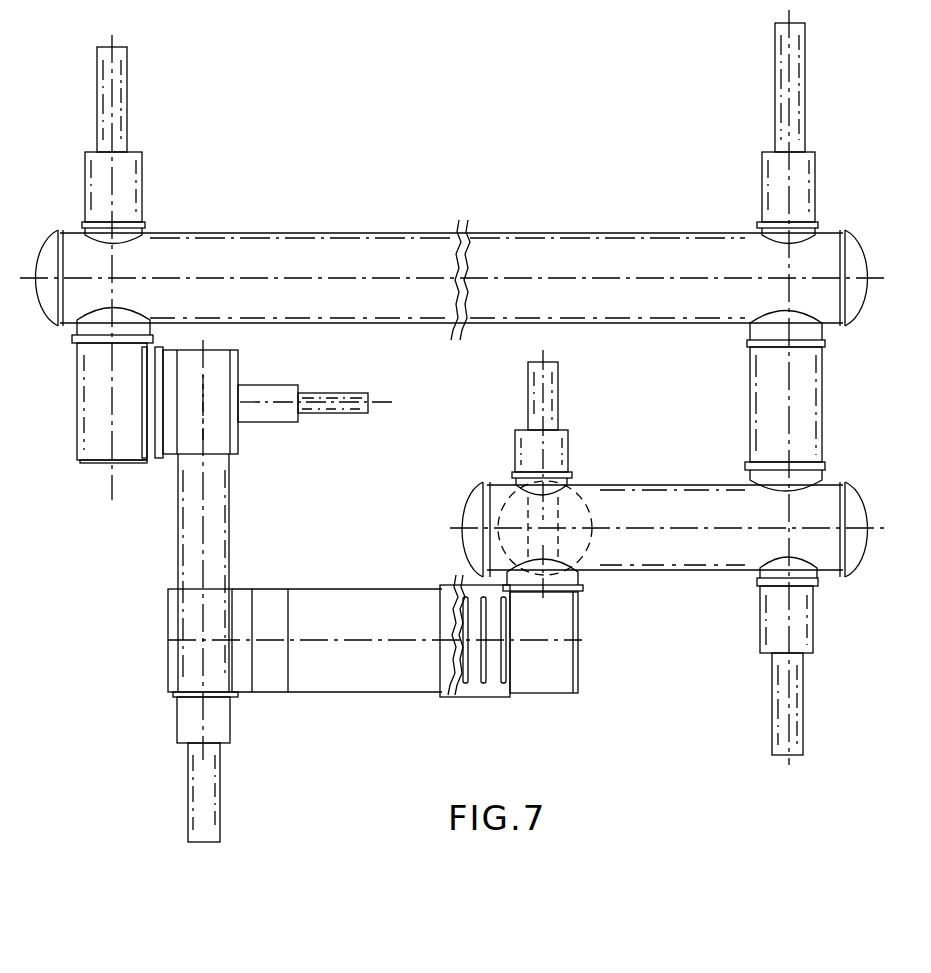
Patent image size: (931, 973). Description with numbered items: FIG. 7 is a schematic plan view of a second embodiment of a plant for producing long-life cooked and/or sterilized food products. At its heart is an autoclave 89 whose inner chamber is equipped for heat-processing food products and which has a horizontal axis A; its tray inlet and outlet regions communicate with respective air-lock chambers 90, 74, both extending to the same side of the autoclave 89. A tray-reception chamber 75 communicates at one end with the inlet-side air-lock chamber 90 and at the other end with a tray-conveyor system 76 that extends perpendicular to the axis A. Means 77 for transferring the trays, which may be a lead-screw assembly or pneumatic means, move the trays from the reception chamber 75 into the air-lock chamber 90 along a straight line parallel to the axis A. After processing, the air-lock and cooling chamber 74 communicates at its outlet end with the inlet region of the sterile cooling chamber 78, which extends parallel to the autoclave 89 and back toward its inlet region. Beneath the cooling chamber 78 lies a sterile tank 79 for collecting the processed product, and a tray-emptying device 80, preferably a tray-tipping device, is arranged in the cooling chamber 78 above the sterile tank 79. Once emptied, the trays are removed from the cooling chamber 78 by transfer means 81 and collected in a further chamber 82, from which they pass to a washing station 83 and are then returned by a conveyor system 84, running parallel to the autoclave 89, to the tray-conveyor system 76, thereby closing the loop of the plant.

The air-lock and cooling chamber 74 is at (750, 412).
The tray-reception chamber 75 is at (173, 447).
The tray-conveyor system 76 is at (230, 563).
The means for transferring the trays 77 is at (278, 390).
The cooling chamber 78 is at (660, 568).
The sterile tank 79 is at (595, 513).
The tray-emptying device 80 is at (560, 510).
The transfer means 81 is at (552, 387).
The further chamber 82 is at (582, 668).
The washing station 83 is at (490, 688).
The conveyor system 84 is at (372, 693).
The autoclave 89 is at (430, 240).
The inlet-side air-lock chamber 90 is at (73, 432).
The horizontal axis A is at (360, 278).